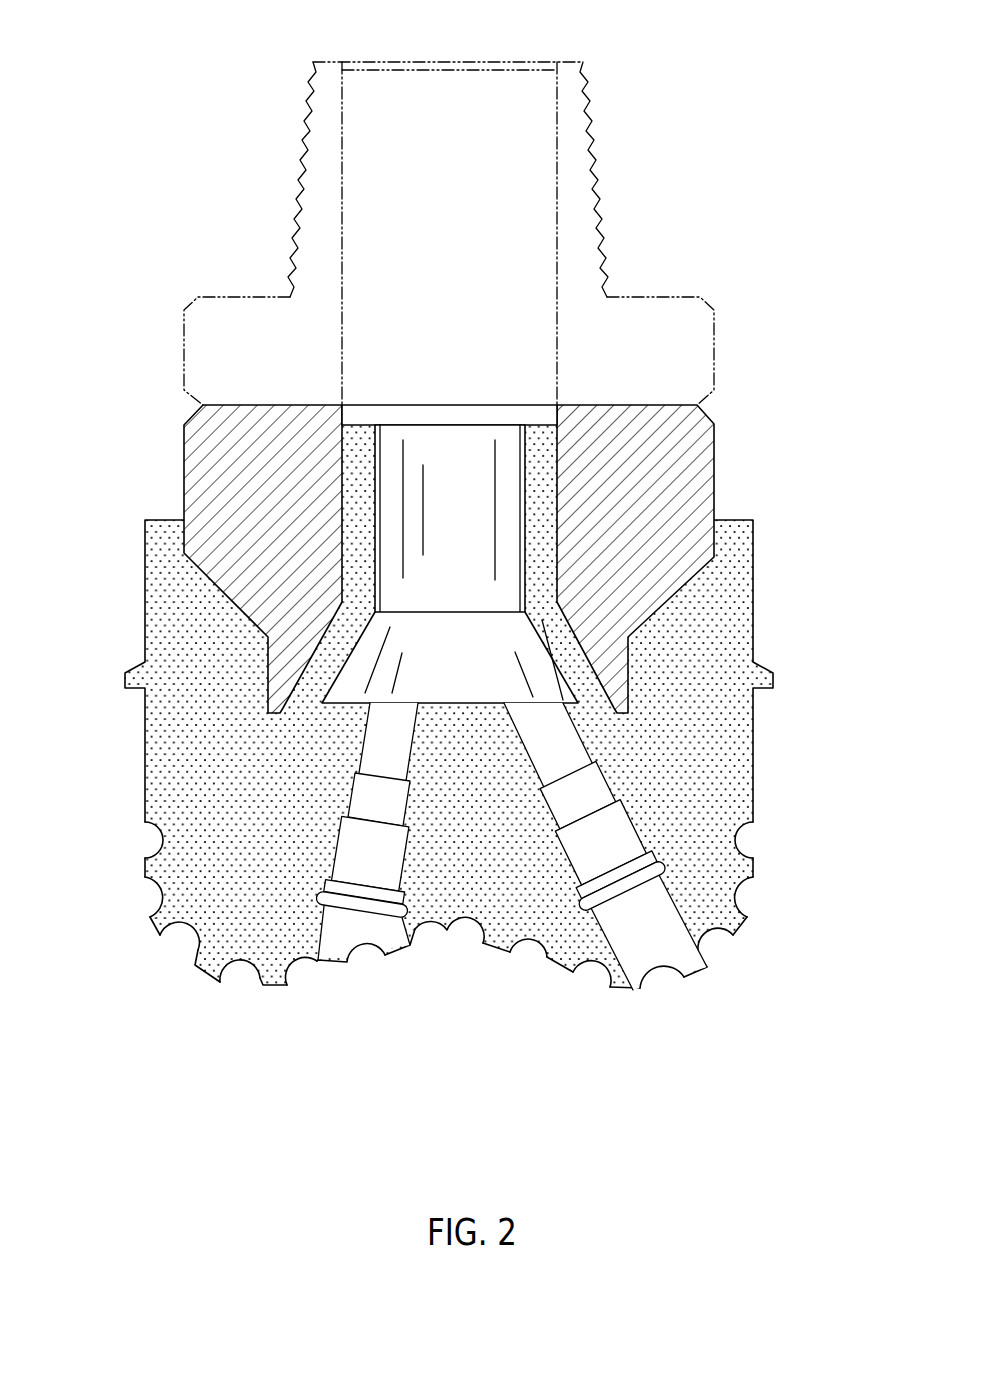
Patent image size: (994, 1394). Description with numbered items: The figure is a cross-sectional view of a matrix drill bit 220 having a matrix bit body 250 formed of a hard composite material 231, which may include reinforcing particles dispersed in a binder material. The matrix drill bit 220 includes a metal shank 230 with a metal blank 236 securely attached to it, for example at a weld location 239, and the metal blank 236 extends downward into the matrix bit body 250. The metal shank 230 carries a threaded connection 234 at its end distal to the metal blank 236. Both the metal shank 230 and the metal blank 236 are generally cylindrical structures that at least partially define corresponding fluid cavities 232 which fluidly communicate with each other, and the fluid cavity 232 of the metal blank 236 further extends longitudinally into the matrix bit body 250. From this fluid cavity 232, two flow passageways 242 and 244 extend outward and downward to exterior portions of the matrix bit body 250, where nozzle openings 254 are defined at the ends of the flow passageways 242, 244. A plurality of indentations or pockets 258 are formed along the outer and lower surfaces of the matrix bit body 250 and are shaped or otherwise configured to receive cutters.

The matrix drill bit 220 is at (458, 521).
The metal shank 230 is at (480, 233).
The hard composite material 231 is at (254, 815).
The fluid cavity 232 is at (467, 215).
The threaded connection 234 is at (305, 150).
The metal blank 236 is at (655, 518).
The weld location 239 is at (198, 404).
The flow passageway 242 is at (388, 868).
The flow passageway 244 is at (618, 855).
The matrix bit body 250 is at (454, 613).
The nozzle opening 254 is at (321, 954).
The pocket 258 is at (150, 831).